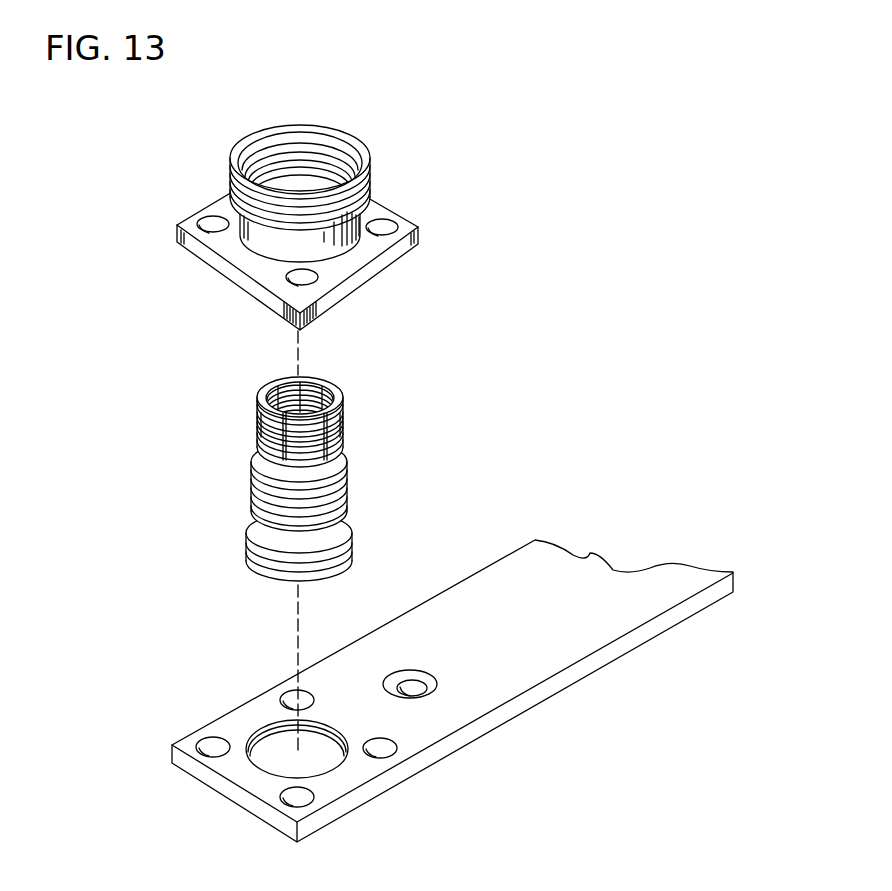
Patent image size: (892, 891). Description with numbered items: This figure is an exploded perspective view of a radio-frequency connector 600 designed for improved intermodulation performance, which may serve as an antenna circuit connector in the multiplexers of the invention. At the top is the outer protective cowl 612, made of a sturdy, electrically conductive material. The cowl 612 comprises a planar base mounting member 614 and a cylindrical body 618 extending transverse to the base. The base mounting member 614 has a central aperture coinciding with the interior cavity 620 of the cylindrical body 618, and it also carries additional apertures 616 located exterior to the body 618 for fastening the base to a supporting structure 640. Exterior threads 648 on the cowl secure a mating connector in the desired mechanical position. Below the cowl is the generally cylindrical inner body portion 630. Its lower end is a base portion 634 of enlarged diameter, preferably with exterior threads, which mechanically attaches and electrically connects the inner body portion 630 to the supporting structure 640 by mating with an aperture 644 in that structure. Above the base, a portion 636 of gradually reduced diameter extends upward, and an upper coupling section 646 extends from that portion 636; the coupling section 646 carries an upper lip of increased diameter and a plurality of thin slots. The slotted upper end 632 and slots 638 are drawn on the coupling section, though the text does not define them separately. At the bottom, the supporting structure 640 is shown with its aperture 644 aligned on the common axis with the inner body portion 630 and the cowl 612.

The radio-frequency connector 600 is at (248, 213).
The outer protective cowl 612 is at (240, 250).
The planar base mounting member 614 is at (235, 249).
The additional apertures 616 is at (283, 279).
The cylindrical body 618 is at (346, 248).
The interior cavity 620 is at (305, 188).
The exterior threads 648 is at (268, 124).
The inner body portion 630 is at (297, 474).
The slotted contact end 632 is at (246, 403).
The base portion 634 is at (246, 553).
The portion of gradually reduced diameter 636 is at (251, 490).
The slots 638 is at (337, 383).
The upper coupling section 646 is at (252, 443).
The supporting structure 640 is at (452, 679).
The aperture in the supporting structure 644 is at (330, 721).